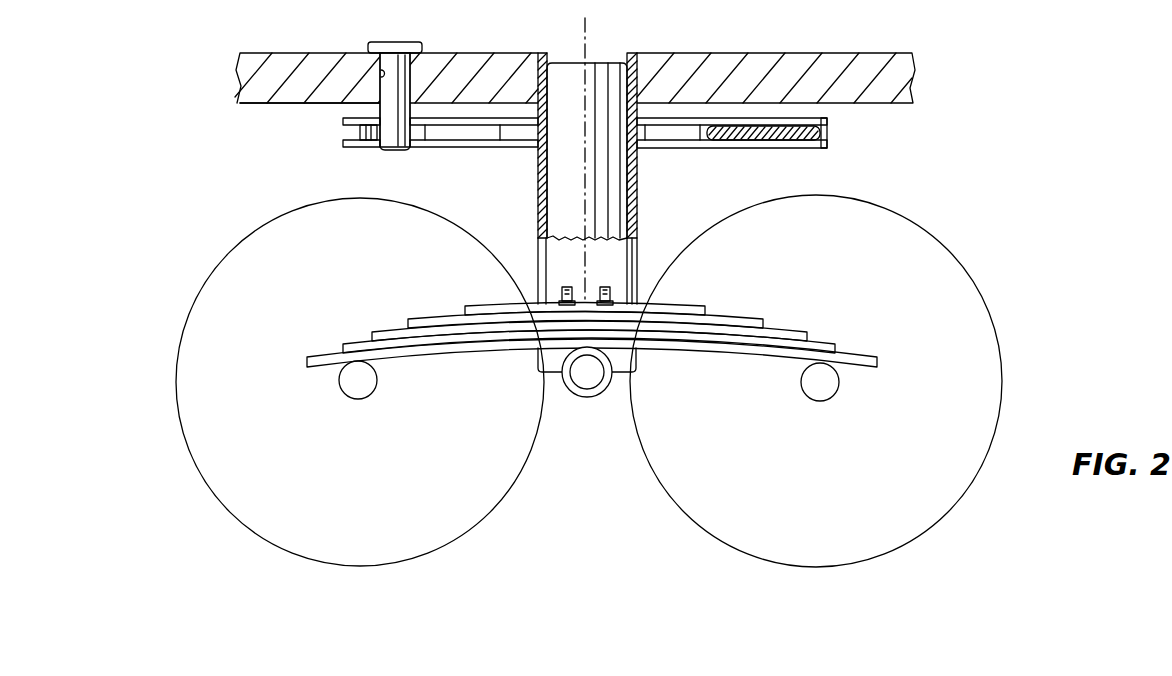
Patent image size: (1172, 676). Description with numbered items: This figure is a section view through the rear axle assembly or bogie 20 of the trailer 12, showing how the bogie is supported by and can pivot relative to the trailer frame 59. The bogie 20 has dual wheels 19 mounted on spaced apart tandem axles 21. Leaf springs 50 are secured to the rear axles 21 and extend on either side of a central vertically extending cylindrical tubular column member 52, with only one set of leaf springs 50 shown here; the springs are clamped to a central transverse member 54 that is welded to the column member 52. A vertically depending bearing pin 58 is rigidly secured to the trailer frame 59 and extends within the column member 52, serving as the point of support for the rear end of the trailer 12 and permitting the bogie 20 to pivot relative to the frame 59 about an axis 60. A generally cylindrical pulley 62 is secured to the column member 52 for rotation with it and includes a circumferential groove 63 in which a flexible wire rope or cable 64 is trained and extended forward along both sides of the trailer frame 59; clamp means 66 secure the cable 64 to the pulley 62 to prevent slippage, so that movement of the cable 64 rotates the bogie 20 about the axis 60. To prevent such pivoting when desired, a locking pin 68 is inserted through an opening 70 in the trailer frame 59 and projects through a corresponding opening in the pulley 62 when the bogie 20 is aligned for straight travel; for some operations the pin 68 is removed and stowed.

The trailer 12 is at (718, 52).
The dual wheels 19 is at (256, 233).
The rear axle assembly or bogie 20 is at (607, 376).
The tandem axles 21 is at (355, 398).
The leaf springs 50 is at (678, 305).
The cylindrical tubular column member 52 is at (637, 218).
The central transverse member 54 is at (574, 398).
The bearing pin 58 is at (592, 92).
The trailer frame 59 is at (290, 104).
The axis 60 is at (585, 176).
The pulley 62 is at (670, 149).
The circumferential groove 63 is at (343, 131).
The cable 64 is at (771, 144).
The clamp means 66 is at (828, 134).
The locking pin 68 is at (400, 68).
The opening 70 is at (384, 73).